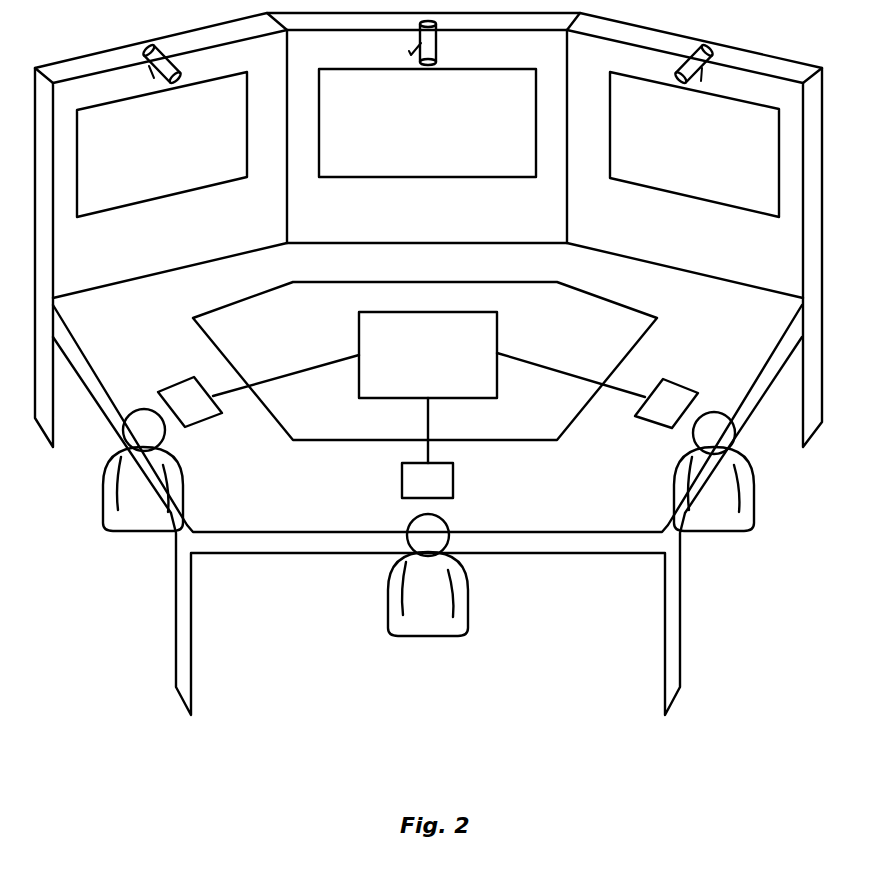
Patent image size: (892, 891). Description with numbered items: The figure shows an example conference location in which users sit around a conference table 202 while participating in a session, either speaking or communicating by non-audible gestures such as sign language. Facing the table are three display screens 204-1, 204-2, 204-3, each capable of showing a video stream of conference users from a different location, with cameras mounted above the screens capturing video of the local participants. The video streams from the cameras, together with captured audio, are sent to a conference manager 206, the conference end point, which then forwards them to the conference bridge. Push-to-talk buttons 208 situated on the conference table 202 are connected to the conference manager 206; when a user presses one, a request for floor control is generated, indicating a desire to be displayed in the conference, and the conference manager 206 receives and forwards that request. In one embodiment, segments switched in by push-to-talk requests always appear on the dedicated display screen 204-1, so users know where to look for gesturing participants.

The conference table 202 is at (563, 555).
The display screen 204-1 is at (162, 130).
The display screen 204-2 is at (427, 99).
The display screen 204-3 is at (694, 130).
The conference manager 206 is at (497, 334).
The push-to-talk button 208 is at (200, 424).